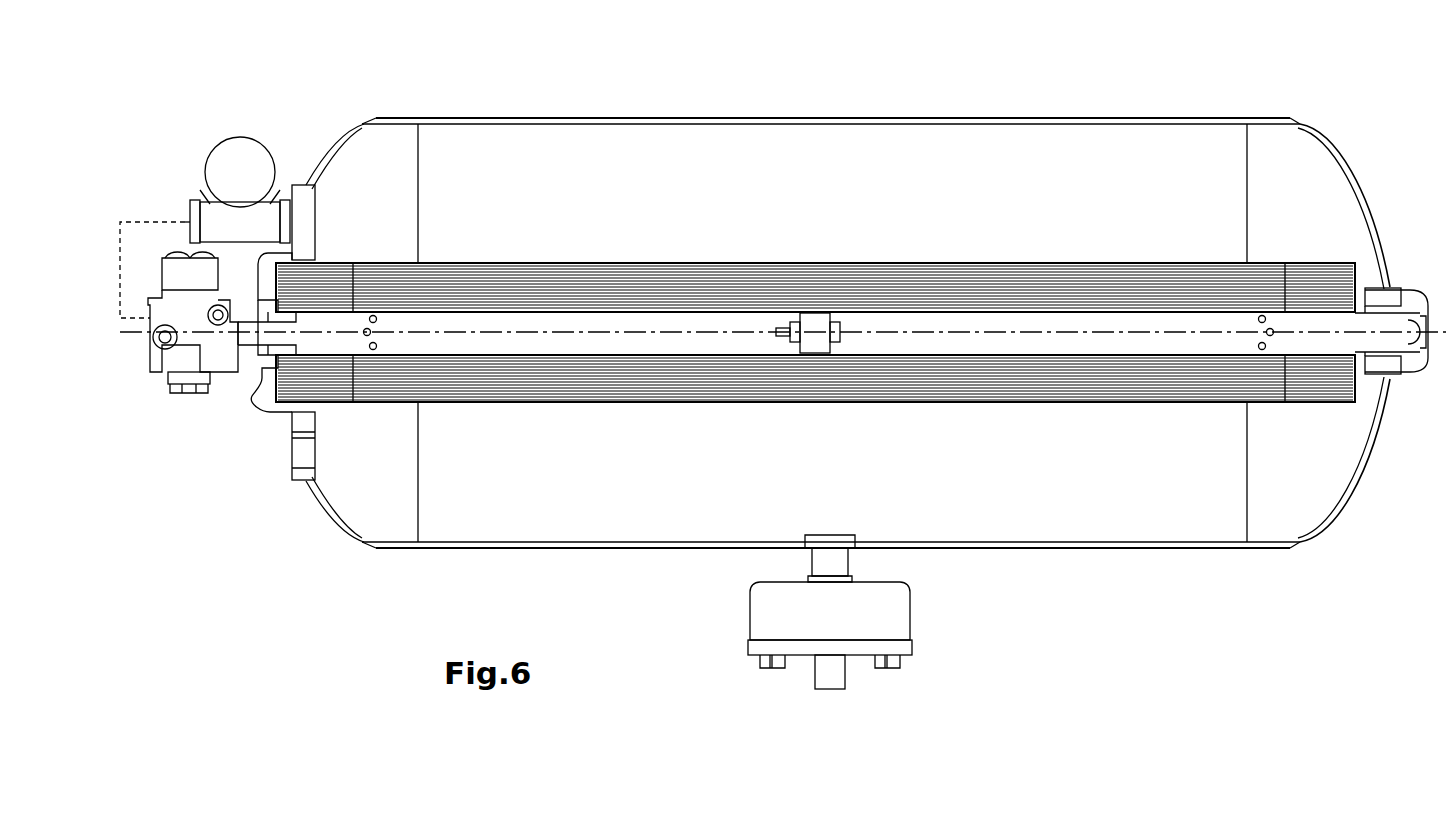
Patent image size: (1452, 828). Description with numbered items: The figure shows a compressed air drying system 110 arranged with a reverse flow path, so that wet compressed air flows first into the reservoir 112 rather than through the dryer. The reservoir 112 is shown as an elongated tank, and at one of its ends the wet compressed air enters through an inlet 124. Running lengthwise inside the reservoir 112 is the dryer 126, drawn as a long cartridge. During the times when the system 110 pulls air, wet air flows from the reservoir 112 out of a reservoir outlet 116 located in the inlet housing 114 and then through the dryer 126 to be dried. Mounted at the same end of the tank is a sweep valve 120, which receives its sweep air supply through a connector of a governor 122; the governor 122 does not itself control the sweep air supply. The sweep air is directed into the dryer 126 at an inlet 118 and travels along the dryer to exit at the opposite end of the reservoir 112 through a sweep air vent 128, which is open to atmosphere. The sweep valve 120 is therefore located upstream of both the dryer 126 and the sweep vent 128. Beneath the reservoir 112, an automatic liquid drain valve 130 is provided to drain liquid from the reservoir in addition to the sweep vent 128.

The system 110 is at (1047, 592).
The reservoir 112 is at (762, 116).
The inlet housing 114 is at (263, 392).
The reservoir outlet 116 is at (250, 287).
The inlet 118 is at (258, 343).
The sweep valve 120 is at (178, 372).
The governor 122 is at (244, 158).
The inlet 124 is at (300, 454).
The dryer 126 is at (945, 262).
The sweep air vent 128 is at (1415, 300).
The automatic liquid drain valve 130 is at (767, 620).